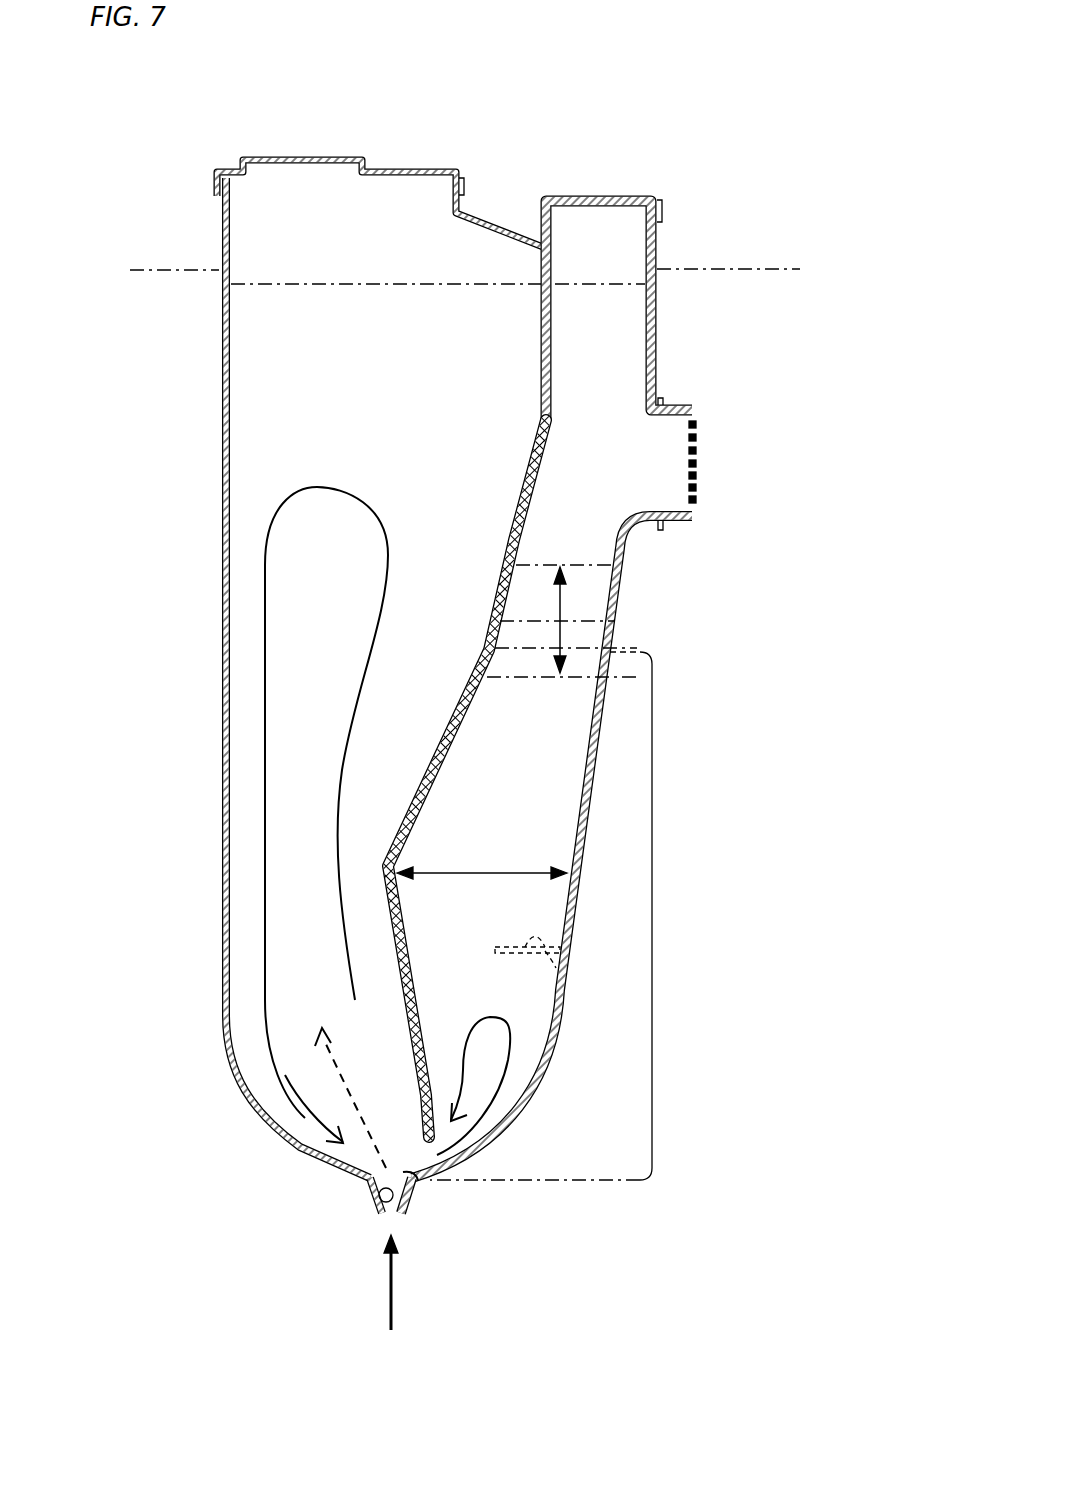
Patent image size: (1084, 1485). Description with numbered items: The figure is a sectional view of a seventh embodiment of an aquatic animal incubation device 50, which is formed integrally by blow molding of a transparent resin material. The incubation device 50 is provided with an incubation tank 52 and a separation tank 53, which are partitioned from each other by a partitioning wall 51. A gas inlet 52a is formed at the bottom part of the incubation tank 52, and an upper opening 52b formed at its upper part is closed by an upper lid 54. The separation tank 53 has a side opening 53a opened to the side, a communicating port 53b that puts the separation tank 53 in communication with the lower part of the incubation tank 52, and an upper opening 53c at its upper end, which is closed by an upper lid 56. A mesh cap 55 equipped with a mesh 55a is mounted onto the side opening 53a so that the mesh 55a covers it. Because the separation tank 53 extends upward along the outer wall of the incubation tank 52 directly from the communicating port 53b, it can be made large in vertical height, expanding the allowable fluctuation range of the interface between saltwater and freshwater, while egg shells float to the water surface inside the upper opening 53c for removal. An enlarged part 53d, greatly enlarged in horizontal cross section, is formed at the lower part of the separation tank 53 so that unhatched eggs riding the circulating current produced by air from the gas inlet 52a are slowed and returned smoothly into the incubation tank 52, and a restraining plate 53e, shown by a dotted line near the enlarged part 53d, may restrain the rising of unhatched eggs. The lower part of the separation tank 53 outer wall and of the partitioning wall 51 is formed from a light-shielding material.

The incubation device 50 is at (758, 67).
The partitioning wall 51 is at (480, 690).
The incubation tank 52 is at (233, 522).
The gas inlet 52a is at (380, 1207).
The upper opening 52b is at (228, 183).
The separation tank 53 is at (596, 705).
The side opening 53a is at (672, 512).
The communicating port 53b is at (420, 1162).
The upper opening 53c is at (641, 206).
The enlarged part 53d is at (480, 878).
The restraining plate 53e is at (560, 975).
The upper lid 54 is at (407, 160).
The mesh cap 55 is at (678, 402).
The mesh 55a is at (696, 450).
The upper lid 56 is at (590, 198).